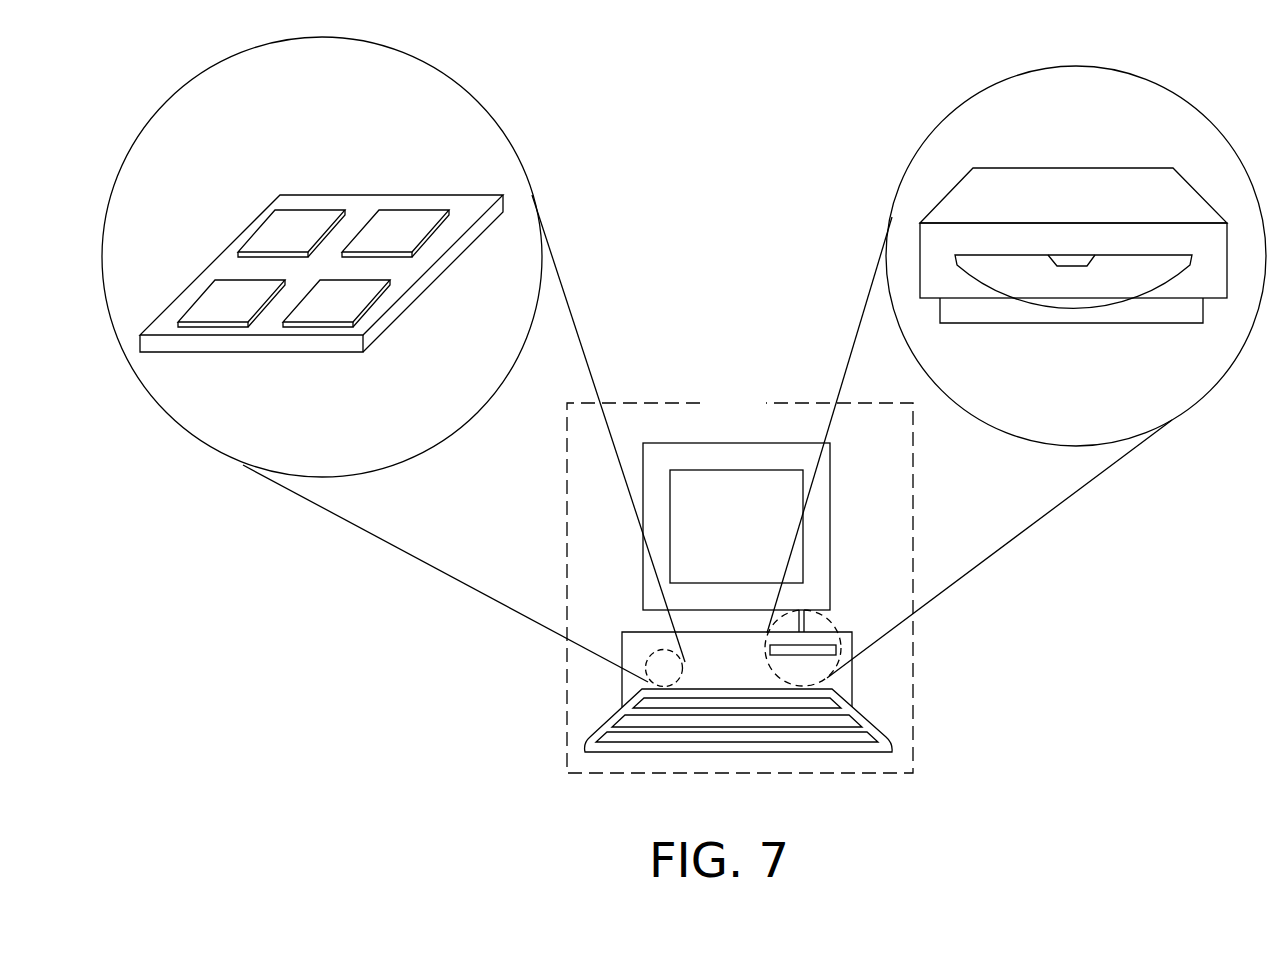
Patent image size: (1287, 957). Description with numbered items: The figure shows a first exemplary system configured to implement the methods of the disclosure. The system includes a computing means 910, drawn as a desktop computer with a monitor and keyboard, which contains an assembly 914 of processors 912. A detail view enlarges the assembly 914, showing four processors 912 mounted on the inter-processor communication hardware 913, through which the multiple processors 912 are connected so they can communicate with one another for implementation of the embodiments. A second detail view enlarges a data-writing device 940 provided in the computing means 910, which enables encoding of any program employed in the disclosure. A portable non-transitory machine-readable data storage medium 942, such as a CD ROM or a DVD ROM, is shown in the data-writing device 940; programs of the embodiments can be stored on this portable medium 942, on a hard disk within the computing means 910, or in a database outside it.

The computing means 910 is at (712, 415).
The processors 912 is at (271, 246).
The inter-processor communication hardware 913 is at (320, 338).
The assembly of processors 914 is at (532, 195).
The data-writing device 940 is at (1057, 207).
The portable non-transitory machine-readable data storage medium 942 is at (1057, 297).